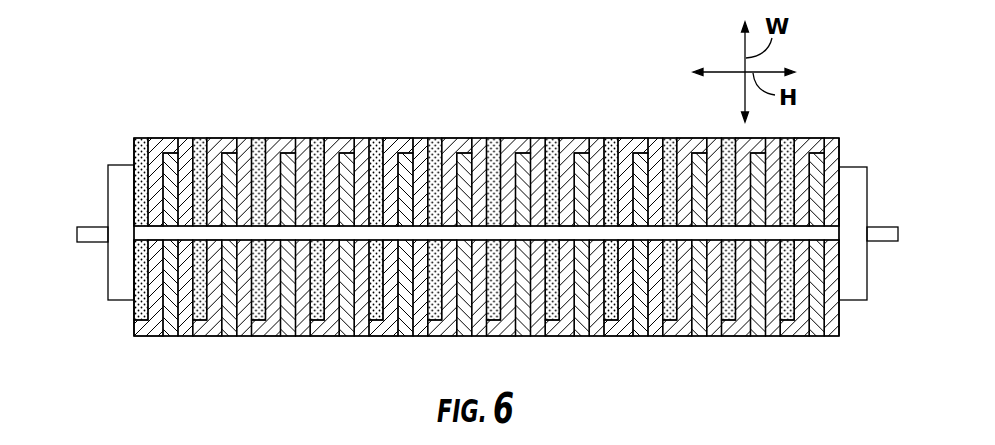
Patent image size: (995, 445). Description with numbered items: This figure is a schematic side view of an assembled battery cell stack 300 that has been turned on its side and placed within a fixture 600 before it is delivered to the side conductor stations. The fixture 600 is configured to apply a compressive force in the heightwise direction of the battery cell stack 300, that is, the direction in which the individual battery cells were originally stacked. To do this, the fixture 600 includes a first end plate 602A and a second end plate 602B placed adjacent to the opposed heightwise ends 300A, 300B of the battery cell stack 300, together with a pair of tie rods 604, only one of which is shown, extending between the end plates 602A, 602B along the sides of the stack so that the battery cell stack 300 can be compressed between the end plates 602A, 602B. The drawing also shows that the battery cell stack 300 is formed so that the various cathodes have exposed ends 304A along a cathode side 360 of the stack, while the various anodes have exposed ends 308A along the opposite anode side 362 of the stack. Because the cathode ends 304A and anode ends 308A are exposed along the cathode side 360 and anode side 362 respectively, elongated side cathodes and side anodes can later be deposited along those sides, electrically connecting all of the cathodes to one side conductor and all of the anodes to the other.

The battery cell stack 300 is at (466, 243).
The first heightwise end of the battery cell stack 300A is at (131, 312).
The second heightwise end of the battery cell stack 300B is at (841, 318).
The exposed ends of the cathodes 304A is at (320, 138).
The exposed ends of the anodes 308A is at (292, 338).
The cathode side of the stack 360 is at (468, 127).
The anode side of the stack 362 is at (387, 338).
The fixture 600 is at (461, 243).
The first end plate 602A is at (115, 272).
The second end plate 602B is at (852, 180).
The tie rod 604 is at (90, 243).